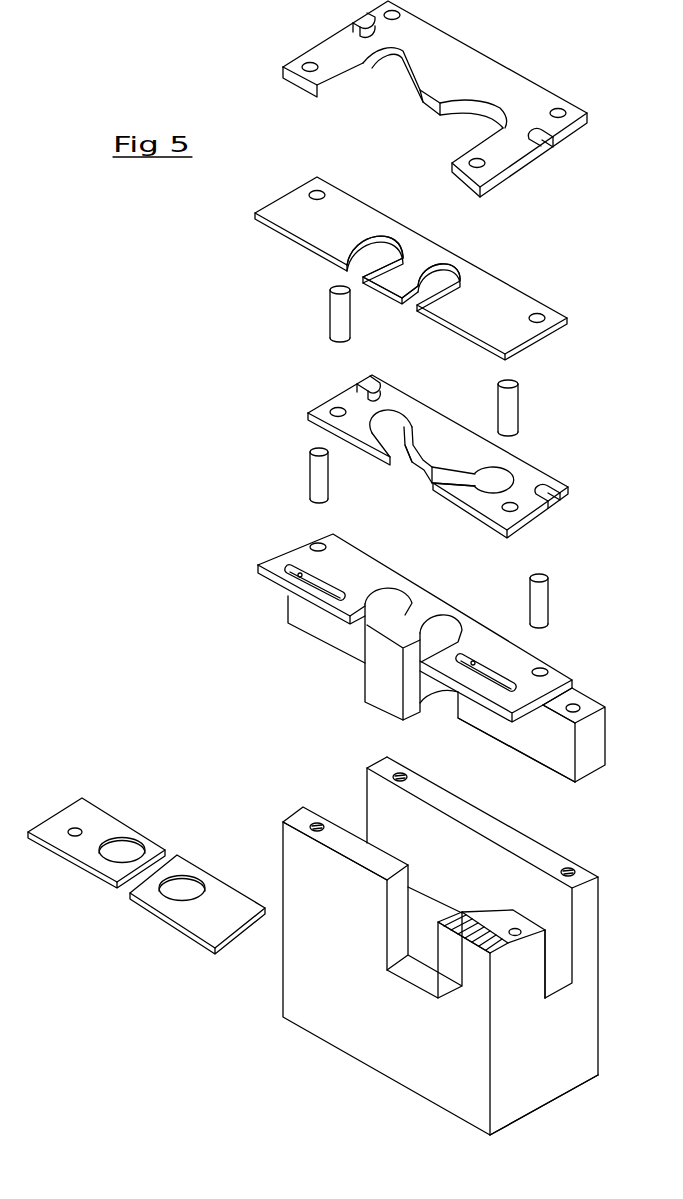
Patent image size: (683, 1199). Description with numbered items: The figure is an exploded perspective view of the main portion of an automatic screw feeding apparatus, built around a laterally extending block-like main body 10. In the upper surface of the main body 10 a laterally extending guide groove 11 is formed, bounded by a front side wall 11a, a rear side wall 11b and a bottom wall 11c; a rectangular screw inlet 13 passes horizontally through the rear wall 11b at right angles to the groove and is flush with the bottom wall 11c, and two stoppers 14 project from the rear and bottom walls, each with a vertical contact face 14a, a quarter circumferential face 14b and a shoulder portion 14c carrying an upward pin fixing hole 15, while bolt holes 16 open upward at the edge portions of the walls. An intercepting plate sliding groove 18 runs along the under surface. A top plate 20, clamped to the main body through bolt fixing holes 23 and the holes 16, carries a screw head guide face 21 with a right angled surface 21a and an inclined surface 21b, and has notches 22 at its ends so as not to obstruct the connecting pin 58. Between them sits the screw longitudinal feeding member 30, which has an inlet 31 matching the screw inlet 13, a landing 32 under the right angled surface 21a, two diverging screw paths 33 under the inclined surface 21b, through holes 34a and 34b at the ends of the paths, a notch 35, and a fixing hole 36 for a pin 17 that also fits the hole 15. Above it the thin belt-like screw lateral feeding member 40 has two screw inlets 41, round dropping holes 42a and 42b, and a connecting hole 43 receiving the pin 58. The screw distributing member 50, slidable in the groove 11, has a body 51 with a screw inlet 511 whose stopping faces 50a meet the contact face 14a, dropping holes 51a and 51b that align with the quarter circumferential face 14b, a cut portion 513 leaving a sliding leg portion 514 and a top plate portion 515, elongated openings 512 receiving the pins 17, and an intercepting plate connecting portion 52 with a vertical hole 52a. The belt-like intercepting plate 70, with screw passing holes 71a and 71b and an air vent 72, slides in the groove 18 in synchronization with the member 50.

The main body 10 is at (439, 942).
The guide groove 11 is at (363, 810).
The front side wall 11a is at (365, 785).
The rear side wall 11b is at (353, 910).
The bottom wall 11c is at (555, 975).
The screw inlet 13 is at (398, 957).
The stopper 14 is at (434, 888).
The vertical contact face 14a is at (463, 913).
The quarter circumferential face 14b is at (490, 918).
The shoulder portion 14c is at (517, 916).
The pin fixing hole 15 is at (517, 940).
The bolt holes 16 is at (283, 822).
The pin 17 is at (328, 307).
The intercepting plate sliding groove 18 is at (577, 1083).
The top plate 20 is at (510, 62).
The screw head guide face 21 is at (433, 104).
The right angled surface 21a is at (422, 100).
The inclined surface 21b is at (453, 113).
The notches 22 is at (550, 138).
The bolt fixing holes 23 is at (290, 58).
The screw longitudinal feeding member 30 is at (520, 456).
The inlet 31 is at (430, 487).
The landing 32 is at (417, 468).
The screw paths 33 is at (447, 468).
The through hole 34a is at (393, 413).
The through hole 34b is at (482, 487).
The notch 35 is at (558, 502).
The fixing hole 36 is at (515, 507).
The screw lateral feeding member 40 is at (285, 237).
The screw inlets 41 is at (403, 299).
The dropping hole 42a is at (380, 240).
The dropping hole 42b is at (440, 268).
The connecting hole 43 is at (538, 317).
The screw distributing member 50 is at (440, 669).
The stopping face 50a is at (404, 698).
The main body of screw distributing member 51 is at (533, 645).
The dropping hole 51a is at (387, 595).
The dropping hole 51b is at (438, 622).
The screw inlet 511 is at (290, 627).
The elongated openings 512 is at (300, 575).
The cut portion 513 is at (482, 723).
The sliding leg portion 514 is at (537, 745).
The top plate portion 515 is at (527, 708).
The intercepting plate connecting portion 52 is at (605, 700).
The vertical hole 52a is at (575, 705).
The connecting pin 58 is at (308, 477).
The screw passing hole intercepting plate 70 is at (146, 864).
The screw passing hole 71a is at (103, 857).
The screw passing hole 71b is at (172, 895).
The air vent 72 is at (73, 828).